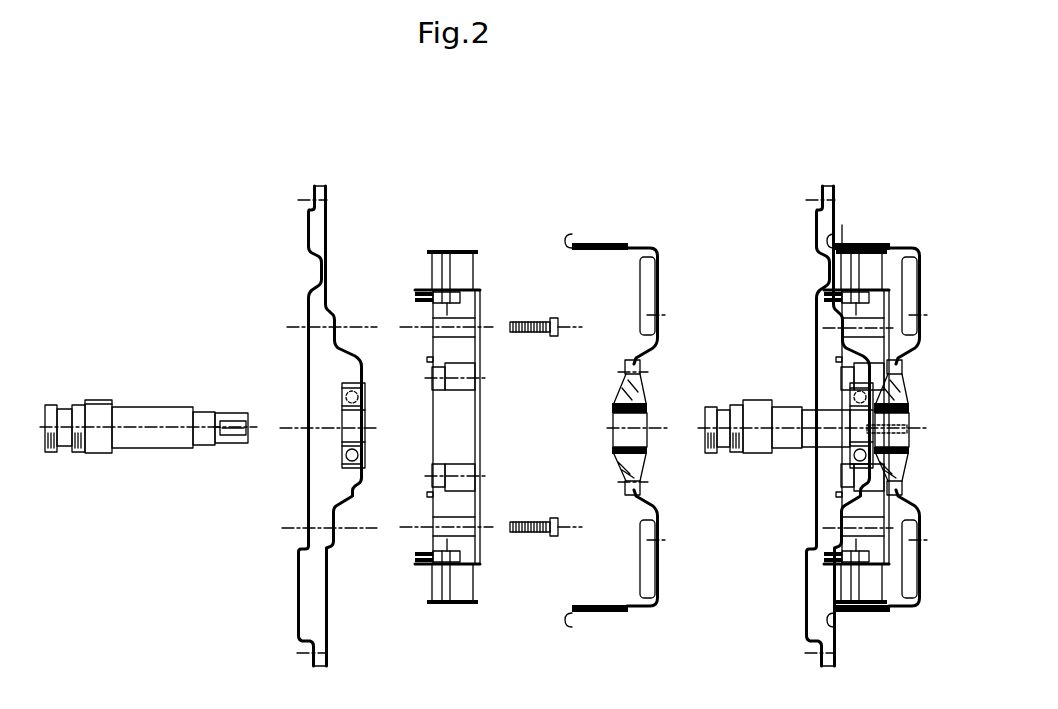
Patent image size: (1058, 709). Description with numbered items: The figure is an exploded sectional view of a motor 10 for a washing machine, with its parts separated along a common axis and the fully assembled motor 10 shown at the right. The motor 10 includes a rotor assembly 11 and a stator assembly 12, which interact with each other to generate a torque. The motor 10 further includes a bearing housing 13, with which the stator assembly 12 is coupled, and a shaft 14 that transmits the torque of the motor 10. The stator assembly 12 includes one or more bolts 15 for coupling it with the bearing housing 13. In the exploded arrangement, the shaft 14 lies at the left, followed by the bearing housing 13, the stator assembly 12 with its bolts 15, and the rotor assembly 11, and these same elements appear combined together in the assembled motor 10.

The motor 10 is at (882, 214).
The rotor assembly 11 is at (610, 243).
The stator assembly 12 is at (453, 252).
The bearing housing 13 is at (318, 185).
The shaft 14 is at (148, 404).
The bolts 15 is at (527, 320).